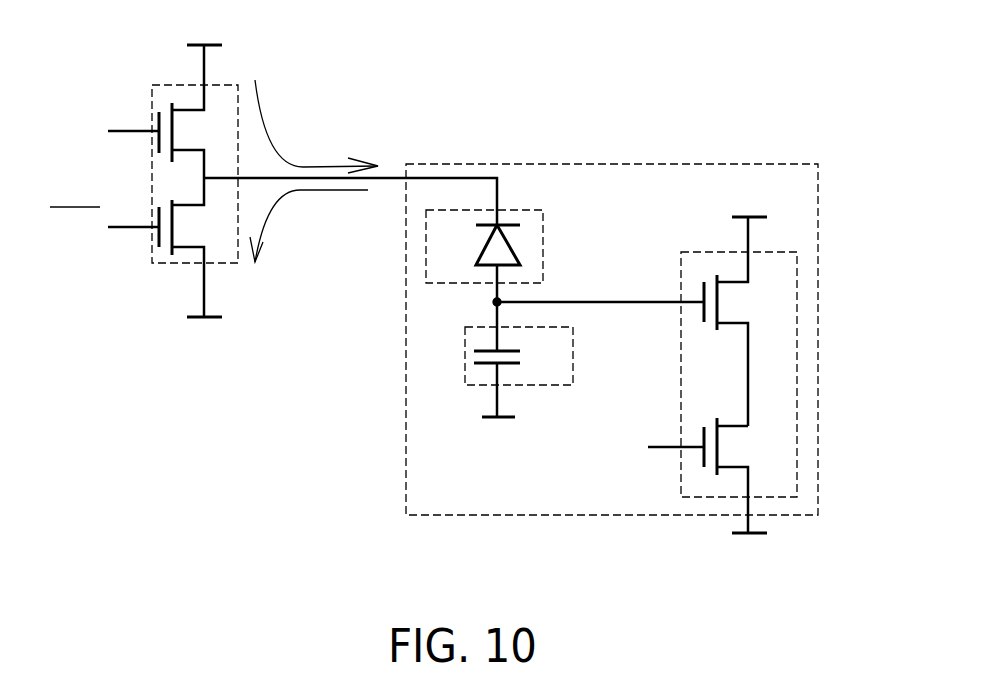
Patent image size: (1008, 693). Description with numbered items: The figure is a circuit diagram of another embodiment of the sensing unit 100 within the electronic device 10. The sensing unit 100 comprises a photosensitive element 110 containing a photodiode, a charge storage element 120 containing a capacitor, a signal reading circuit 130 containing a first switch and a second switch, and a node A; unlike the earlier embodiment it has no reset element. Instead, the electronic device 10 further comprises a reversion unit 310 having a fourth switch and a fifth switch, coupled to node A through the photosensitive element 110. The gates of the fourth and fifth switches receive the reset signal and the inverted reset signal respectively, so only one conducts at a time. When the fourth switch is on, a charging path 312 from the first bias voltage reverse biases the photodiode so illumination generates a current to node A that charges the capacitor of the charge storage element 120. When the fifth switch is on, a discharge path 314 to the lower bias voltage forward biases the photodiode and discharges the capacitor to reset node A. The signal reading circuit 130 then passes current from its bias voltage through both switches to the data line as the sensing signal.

The electronic device 10 is at (764, 102).
The sensing unit 100 is at (818, 304).
The photosensitive element 110 is at (543, 248).
The charge storage element 120 is at (573, 357).
The signal reading circuit 130 is at (797, 388).
The reversion unit 310 is at (152, 176).
The charging path 312 is at (278, 152).
The discharge path 314 is at (292, 197).